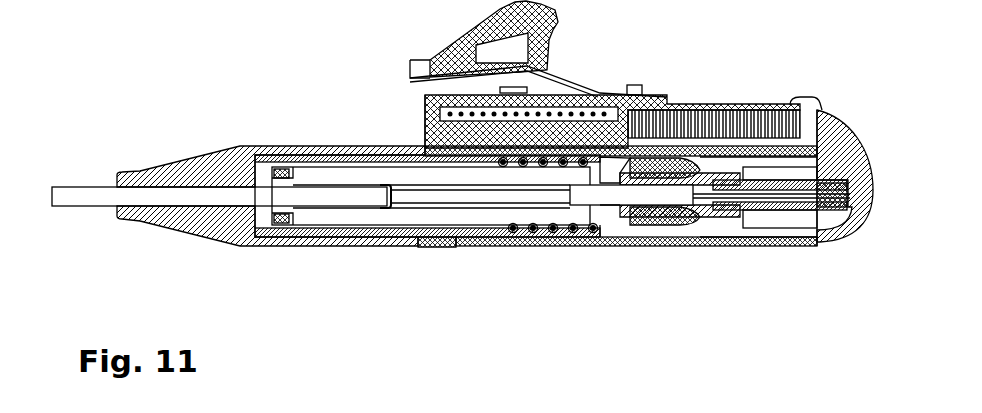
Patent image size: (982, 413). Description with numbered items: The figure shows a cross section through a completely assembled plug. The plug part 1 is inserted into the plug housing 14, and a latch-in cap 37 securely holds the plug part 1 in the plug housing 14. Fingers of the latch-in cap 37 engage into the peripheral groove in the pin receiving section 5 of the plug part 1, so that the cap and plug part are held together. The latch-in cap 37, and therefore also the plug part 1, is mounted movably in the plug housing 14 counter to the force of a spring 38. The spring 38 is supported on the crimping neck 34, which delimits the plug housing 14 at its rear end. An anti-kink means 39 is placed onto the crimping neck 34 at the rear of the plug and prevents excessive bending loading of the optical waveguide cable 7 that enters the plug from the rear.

The plug part 1 is at (407, 208).
The pin receiving section 5 is at (725, 220).
The optical waveguide cable 7 is at (98, 206).
The plug housing 14 is at (597, 240).
The crimping neck 34 is at (418, 240).
The latch-in cap 37 is at (645, 222).
The spring 38 is at (525, 240).
The anti-kink means 39 is at (215, 219).